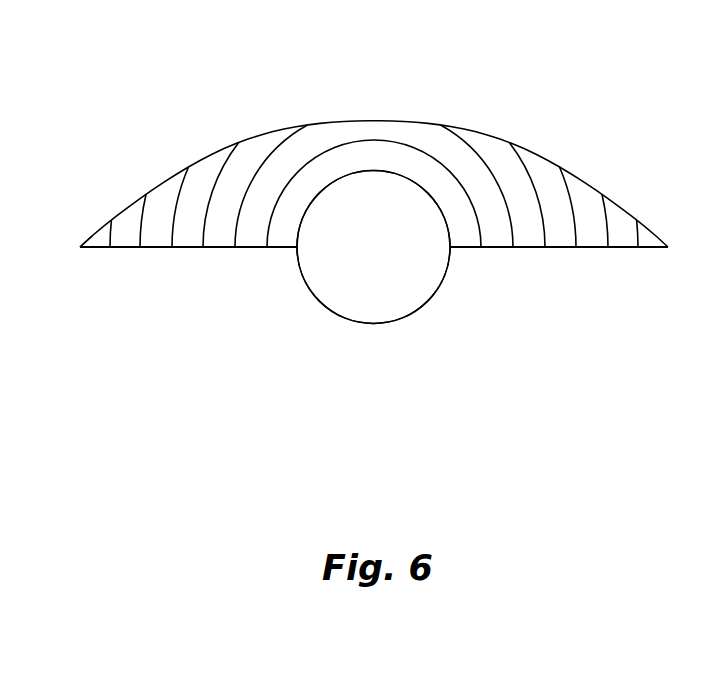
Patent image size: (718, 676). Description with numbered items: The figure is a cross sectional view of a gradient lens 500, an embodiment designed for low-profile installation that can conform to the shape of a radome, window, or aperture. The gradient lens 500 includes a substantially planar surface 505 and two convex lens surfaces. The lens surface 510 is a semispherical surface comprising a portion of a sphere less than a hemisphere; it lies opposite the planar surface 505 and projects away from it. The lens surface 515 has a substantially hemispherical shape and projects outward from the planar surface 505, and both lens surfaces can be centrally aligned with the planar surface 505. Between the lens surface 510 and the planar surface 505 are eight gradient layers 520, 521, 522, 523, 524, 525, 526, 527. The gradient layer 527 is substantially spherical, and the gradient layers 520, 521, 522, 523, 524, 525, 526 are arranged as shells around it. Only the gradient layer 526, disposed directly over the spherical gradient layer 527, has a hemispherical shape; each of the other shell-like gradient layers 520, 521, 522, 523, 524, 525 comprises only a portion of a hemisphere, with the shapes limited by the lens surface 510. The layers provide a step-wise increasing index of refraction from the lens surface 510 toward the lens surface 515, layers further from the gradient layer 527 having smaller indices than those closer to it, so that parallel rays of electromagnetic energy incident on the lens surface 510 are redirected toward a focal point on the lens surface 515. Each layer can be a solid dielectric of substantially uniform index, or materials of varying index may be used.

The gradient lens 500 is at (198, 80).
The planar surface 505 is at (492, 247).
The lens surface 510 is at (480, 133).
The lens surface 515 is at (383, 323).
The gradient layer 520 is at (98, 247).
The gradient layer 521 is at (125, 247).
The gradient layer 522 is at (157, 247).
The gradient layer 523 is at (188, 247).
The gradient layer 524 is at (220, 247).
The gradient layer 525 is at (252, 247).
The gradient layer 526 is at (283, 247).
The gradient layer 527 is at (329, 285).